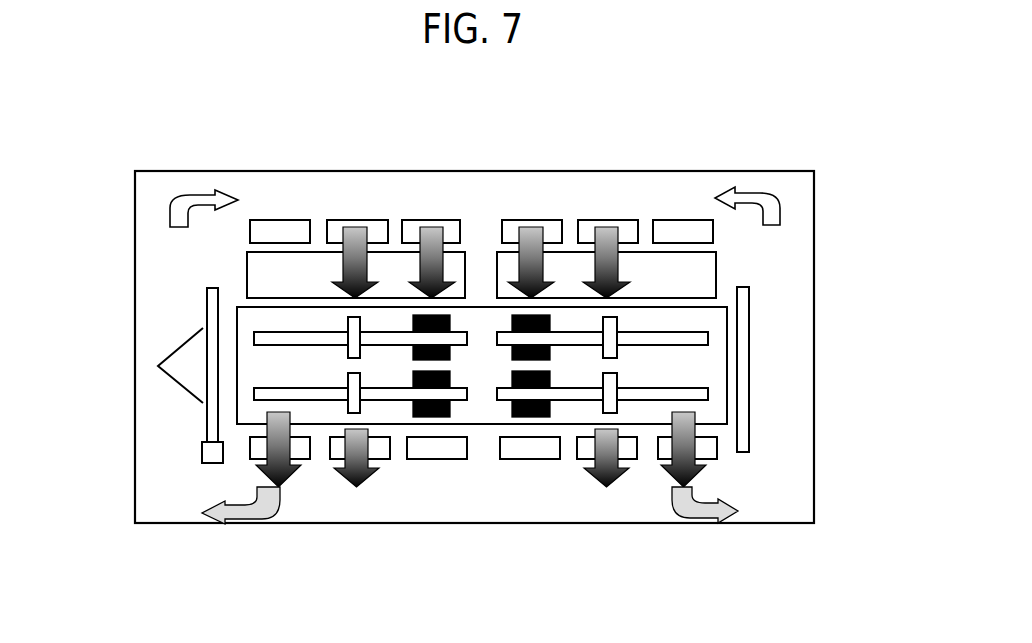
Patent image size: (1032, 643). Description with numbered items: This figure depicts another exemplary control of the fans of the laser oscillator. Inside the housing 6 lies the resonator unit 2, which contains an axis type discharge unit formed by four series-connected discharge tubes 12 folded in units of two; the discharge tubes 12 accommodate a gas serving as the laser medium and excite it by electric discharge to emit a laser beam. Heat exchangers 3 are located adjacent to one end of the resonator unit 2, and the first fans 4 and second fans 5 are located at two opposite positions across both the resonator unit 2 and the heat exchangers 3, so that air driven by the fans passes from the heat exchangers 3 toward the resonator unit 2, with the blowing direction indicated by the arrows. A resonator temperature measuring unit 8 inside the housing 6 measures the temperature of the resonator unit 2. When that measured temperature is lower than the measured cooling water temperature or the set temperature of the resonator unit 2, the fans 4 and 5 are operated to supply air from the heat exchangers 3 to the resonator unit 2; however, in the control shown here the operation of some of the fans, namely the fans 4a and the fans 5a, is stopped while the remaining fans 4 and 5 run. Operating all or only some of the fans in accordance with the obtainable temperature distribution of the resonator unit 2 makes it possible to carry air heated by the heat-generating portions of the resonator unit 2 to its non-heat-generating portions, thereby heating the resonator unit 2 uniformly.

The resonator unit 2 is at (477, 317).
The heat exchangers 3 is at (252, 263).
The first fans 4 is at (382, 450).
The fans 4a is at (440, 452).
The second fans 5 is at (377, 230).
The fans 5a is at (278, 230).
The housing 6 is at (815, 290).
The resonator temperature measuring unit 8 is at (212, 455).
The discharge tubes 12 is at (705, 335).